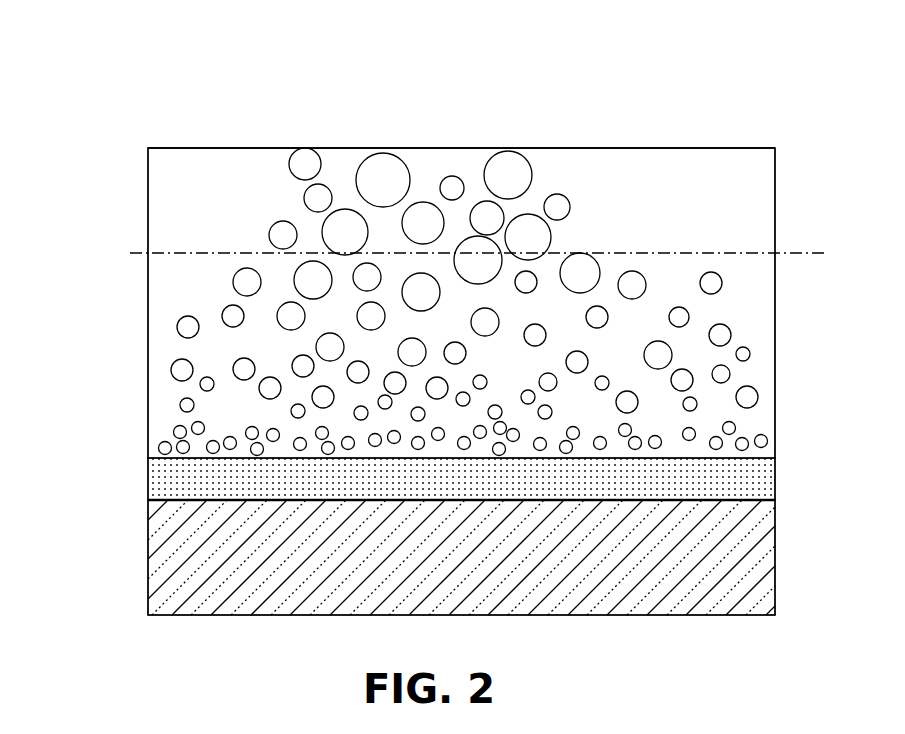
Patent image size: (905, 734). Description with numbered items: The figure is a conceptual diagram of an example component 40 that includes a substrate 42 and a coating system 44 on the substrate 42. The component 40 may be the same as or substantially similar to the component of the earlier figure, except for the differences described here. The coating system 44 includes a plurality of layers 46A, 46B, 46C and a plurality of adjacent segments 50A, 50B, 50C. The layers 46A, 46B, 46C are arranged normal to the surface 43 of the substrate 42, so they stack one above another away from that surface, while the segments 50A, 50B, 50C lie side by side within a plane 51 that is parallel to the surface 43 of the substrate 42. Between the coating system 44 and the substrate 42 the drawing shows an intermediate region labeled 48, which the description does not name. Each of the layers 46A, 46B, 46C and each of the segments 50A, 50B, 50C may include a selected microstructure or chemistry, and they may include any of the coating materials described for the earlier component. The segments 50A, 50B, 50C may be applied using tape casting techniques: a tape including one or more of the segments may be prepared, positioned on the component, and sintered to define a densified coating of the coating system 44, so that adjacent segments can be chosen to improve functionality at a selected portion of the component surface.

The component 40 is at (73, 91).
The substrate 42 is at (147, 598).
The surface 43 is at (742, 502).
The coating system 44 is at (138, 148).
The layer 46A is at (778, 417).
The layer 46B is at (778, 350).
The layer 46C is at (778, 253).
The bond layer 48 is at (147, 490).
The segment 50A is at (278, 148).
The segment 50B is at (595, 148).
The segment 50C is at (775, 148).
The plane 51 is at (653, 252).